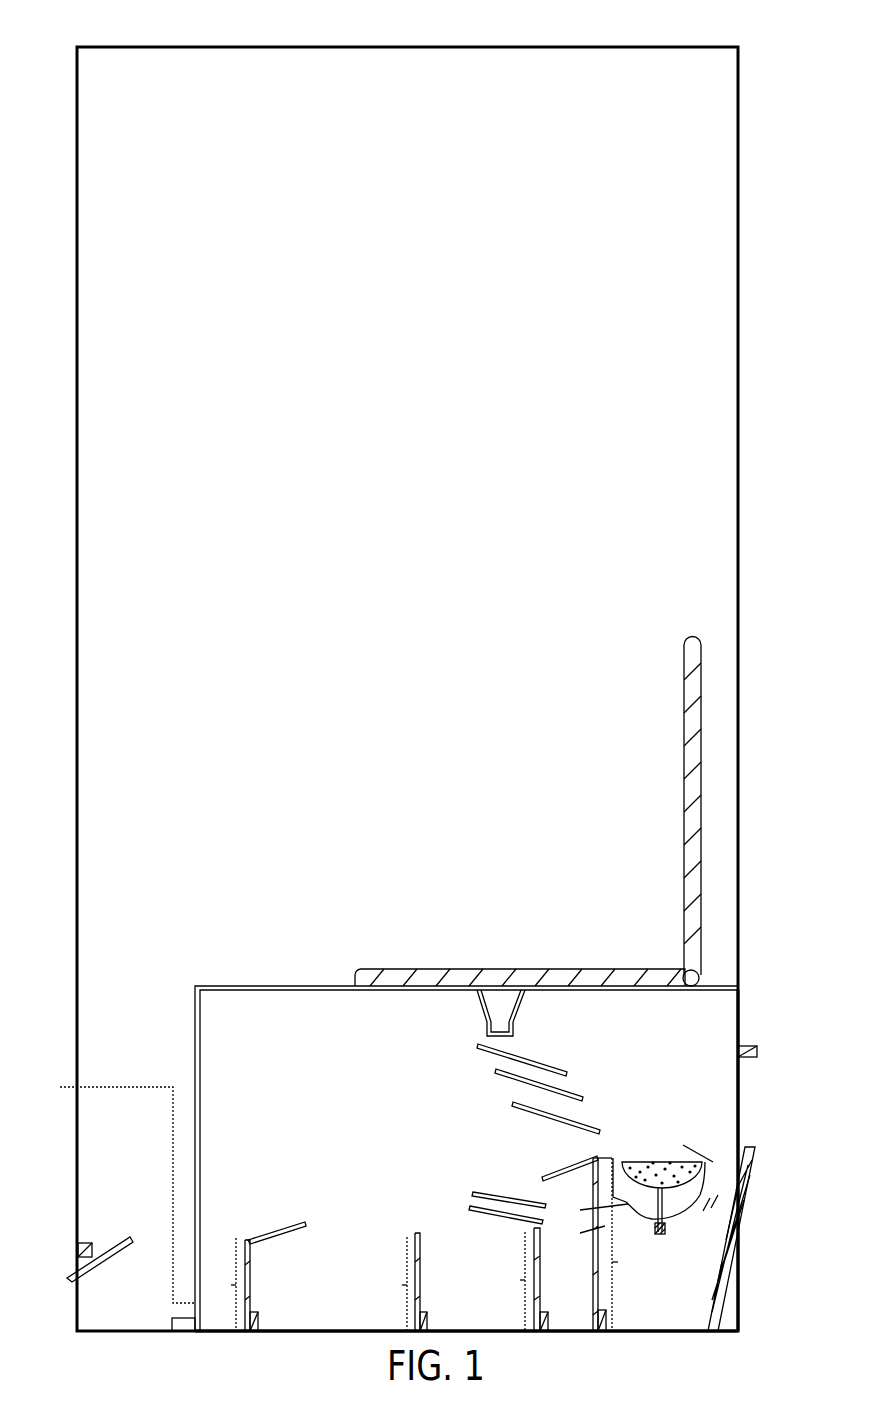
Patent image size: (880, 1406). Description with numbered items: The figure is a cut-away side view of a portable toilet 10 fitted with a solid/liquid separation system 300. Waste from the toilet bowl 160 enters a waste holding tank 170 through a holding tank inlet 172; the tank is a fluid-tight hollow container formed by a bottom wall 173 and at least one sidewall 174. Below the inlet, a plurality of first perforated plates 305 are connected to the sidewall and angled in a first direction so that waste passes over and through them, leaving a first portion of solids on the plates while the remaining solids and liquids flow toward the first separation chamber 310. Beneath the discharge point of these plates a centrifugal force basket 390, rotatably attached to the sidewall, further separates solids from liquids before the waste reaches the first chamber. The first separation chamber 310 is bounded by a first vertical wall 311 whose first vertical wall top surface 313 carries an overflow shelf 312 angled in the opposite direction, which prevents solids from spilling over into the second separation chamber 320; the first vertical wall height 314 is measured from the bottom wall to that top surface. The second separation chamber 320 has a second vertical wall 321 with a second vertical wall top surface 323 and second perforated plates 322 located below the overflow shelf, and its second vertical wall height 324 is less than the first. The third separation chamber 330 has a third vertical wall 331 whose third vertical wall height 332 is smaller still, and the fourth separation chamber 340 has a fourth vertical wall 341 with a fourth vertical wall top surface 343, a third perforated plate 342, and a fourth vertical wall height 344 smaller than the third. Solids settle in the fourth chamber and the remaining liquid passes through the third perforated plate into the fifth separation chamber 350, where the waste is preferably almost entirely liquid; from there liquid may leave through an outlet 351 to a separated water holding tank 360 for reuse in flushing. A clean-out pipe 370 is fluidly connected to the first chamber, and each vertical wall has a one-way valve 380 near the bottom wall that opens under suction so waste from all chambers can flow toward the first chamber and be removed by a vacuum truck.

The portable toilet 10 is at (778, 86).
The toilet bowl 160 is at (489, 969).
The waste holding tank 170 is at (300, 985).
The holding tank inlet 172 is at (504, 1043).
The bottom wall 173 is at (680, 1331).
The sidewall 174 is at (740, 1115).
The solid/liquid separation system 300 is at (772, 1034).
The first perforated plates 305 is at (512, 1103).
The first separation chamber 310 is at (688, 1312).
The first vertical wall 311 is at (605, 1212).
The overflow shelf 312 is at (555, 1170).
The first vertical wall top surface 313 is at (600, 1156).
The first vertical wall height 314 is at (632, 1244).
The second separation chamber 320 is at (565, 1312).
The second vertical wall 321 is at (533, 1250).
The second perforated plates 322 is at (470, 1207).
The second vertical wall top surface 323 is at (540, 1218).
The second vertical wall height 324 is at (509, 1281).
The third separation chamber 330 is at (500, 1310).
The third vertical wall 331 is at (421, 1280).
The third vertical wall height 332 is at (390, 1284).
The fourth separation chamber 340 is at (358, 1310).
The fourth vertical wall 341 is at (251, 1280).
The third perforated plate 342 is at (305, 1222).
The fourth vertical wall top surface 343 is at (260, 1236).
The fourth vertical wall height 344 is at (219, 1284).
The fifth separation chamber 350 is at (218, 1310).
The outlet 351 is at (184, 1322).
The separated water holding tank 360 is at (95, 1145).
The clean-out pipe 370 is at (752, 1192).
The one-way valve 380 is at (256, 1322).
The centrifugal force basket 390 is at (668, 1160).